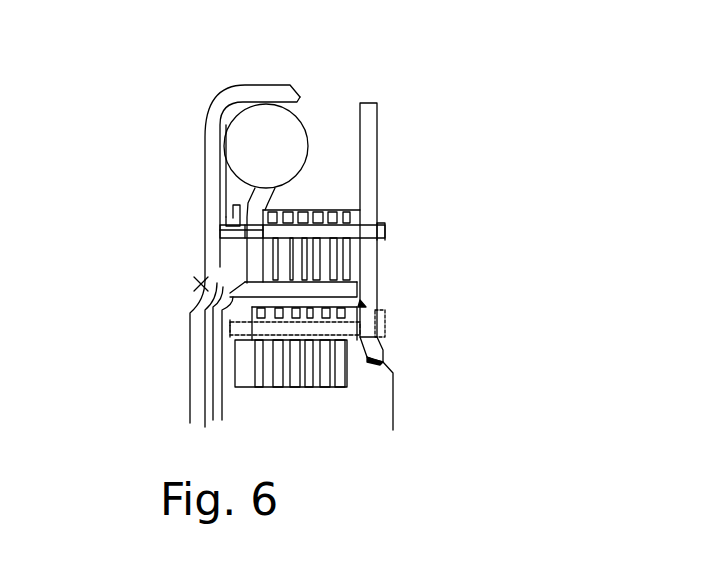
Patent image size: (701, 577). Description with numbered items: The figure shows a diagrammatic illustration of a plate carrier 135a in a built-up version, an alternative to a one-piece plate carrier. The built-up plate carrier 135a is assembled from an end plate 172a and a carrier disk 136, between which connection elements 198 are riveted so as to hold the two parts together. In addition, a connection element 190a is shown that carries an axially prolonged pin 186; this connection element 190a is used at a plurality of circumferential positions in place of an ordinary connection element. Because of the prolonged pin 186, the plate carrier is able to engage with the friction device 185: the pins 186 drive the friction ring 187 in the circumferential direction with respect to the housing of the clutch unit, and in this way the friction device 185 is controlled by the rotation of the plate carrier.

The carrier disk 136 is at (367, 173).
The end plate 172a is at (242, 362).
The friction device 185 is at (210, 238).
The pin 186 is at (220, 230).
The friction ring 187 is at (220, 210).
The connection element 190a is at (318, 208).
The connection elements 198 is at (363, 302).
The plate carrier 135a is at (382, 355).